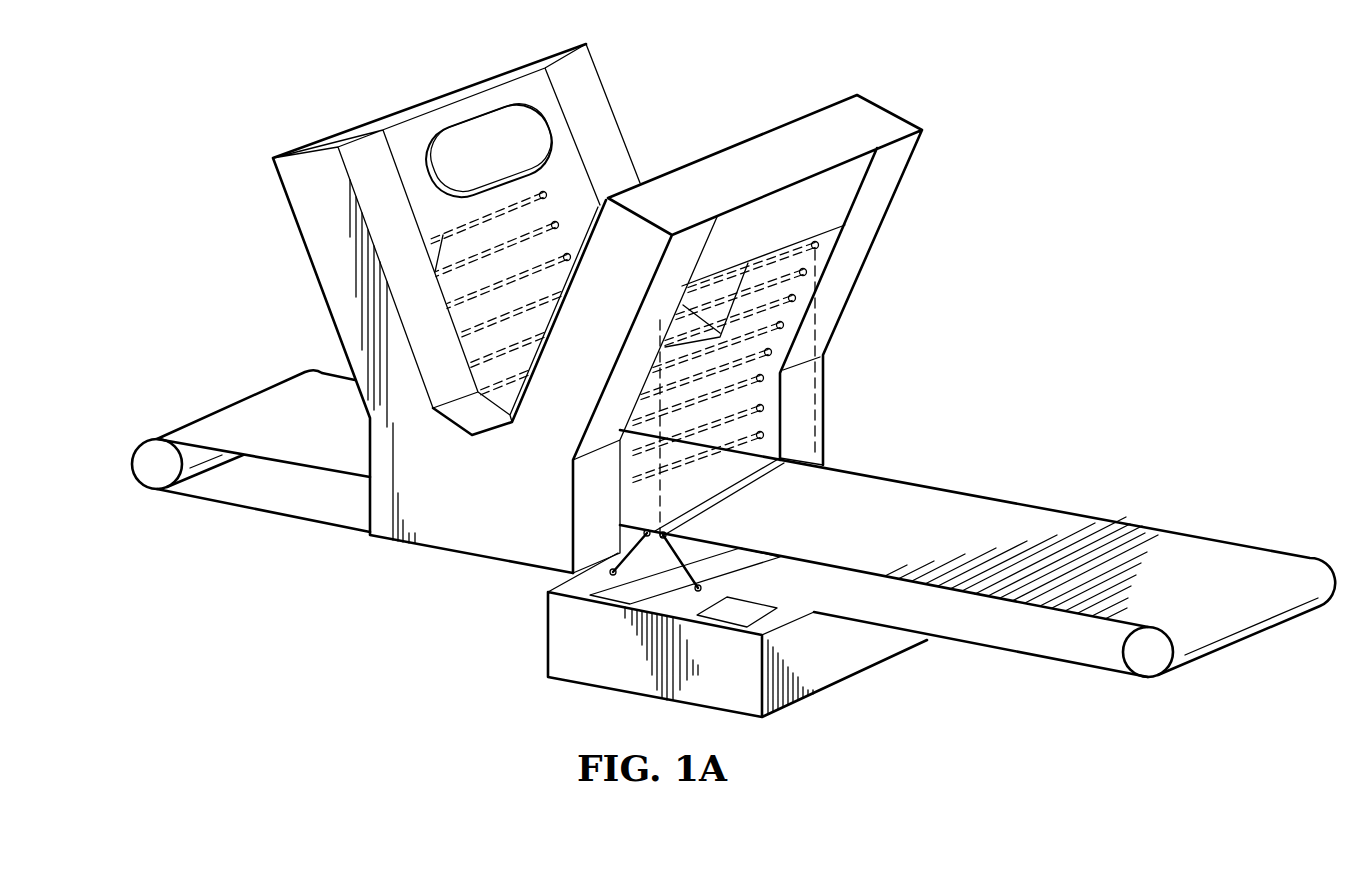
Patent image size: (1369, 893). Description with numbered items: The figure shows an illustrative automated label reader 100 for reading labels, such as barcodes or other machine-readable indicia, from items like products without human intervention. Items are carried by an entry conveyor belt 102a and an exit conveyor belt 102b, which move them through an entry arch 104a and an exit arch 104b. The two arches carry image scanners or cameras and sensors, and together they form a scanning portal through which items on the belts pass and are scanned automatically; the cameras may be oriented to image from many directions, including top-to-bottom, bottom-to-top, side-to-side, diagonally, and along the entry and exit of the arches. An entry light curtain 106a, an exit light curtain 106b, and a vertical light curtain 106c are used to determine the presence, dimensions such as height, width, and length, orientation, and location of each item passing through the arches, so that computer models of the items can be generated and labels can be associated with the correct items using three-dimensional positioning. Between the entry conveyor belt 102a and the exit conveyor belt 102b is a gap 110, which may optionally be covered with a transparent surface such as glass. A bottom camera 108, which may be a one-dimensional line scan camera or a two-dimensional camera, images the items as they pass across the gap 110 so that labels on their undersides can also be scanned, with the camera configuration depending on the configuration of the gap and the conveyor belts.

The automated label reader 100 is at (1029, 168).
The entry conveyor belt 102a is at (230, 403).
The exit conveyor belt 102b is at (1070, 510).
The entry arch 104a is at (392, 96).
The exit arch 104b is at (729, 134).
The entry light curtain 106a is at (522, 232).
The exit light curtain 106b is at (703, 463).
The vertical light curtain 106c is at (818, 410).
The bottom camera 108 is at (535, 635).
The gap 110 is at (833, 450).